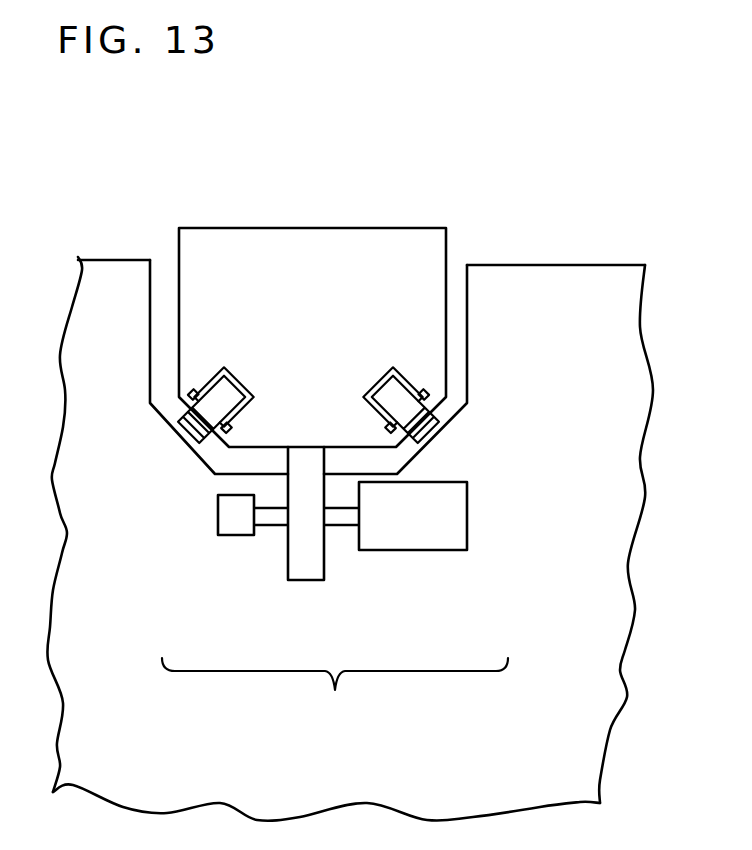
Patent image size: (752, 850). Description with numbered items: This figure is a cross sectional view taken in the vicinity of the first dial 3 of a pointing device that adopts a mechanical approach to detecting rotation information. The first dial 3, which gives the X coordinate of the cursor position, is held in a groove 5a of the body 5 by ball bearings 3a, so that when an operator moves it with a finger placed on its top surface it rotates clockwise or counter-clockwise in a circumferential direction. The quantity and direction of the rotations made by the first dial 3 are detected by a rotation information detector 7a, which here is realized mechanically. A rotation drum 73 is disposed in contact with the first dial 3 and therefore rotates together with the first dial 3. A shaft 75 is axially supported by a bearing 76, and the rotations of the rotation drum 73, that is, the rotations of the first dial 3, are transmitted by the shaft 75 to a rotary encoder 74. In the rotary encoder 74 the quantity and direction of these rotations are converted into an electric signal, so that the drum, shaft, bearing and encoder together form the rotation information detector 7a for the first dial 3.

The first dial 3 is at (312, 345).
The ball bearings 3a is at (193, 441).
The body 5 is at (562, 364).
The groove 5a is at (455, 274).
The rotation drum 73 is at (302, 576).
The rotary encoder 74 is at (452, 527).
The shaft 75 is at (265, 520).
The bearing 76 is at (221, 515).
The rotation information detector 7a is at (335, 696).